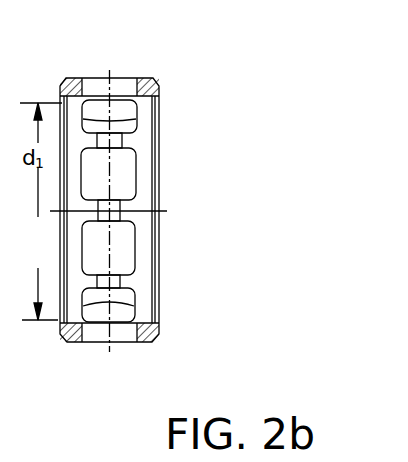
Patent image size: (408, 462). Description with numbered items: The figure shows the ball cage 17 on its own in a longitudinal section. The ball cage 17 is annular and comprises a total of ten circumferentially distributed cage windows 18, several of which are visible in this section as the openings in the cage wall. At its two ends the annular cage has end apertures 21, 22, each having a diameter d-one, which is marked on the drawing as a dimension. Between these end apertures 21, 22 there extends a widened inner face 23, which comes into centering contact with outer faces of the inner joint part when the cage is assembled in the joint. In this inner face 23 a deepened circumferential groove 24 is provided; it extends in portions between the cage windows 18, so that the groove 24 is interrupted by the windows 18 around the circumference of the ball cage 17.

The ball cage 17 is at (178, 70).
The cage windows 18 is at (127, 167).
The end aperture 21 is at (158, 234).
The end aperture 22 is at (58, 233).
The widened inner face 23 is at (140, 312).
The circumferential groove 24 is at (128, 273).